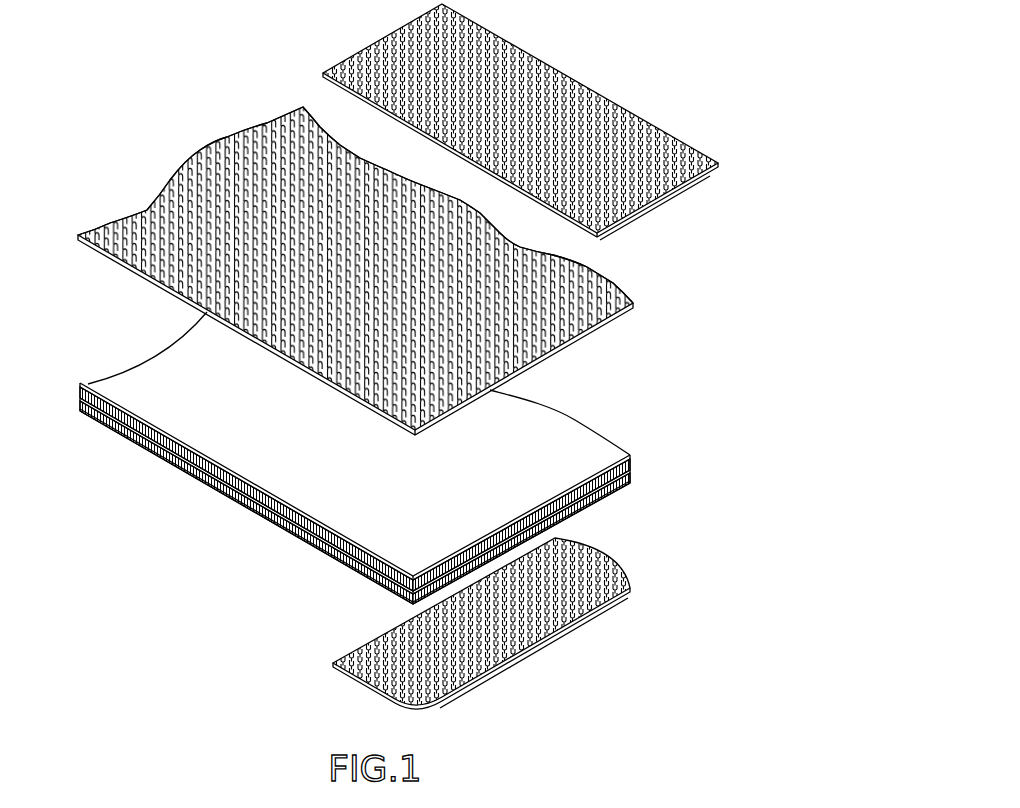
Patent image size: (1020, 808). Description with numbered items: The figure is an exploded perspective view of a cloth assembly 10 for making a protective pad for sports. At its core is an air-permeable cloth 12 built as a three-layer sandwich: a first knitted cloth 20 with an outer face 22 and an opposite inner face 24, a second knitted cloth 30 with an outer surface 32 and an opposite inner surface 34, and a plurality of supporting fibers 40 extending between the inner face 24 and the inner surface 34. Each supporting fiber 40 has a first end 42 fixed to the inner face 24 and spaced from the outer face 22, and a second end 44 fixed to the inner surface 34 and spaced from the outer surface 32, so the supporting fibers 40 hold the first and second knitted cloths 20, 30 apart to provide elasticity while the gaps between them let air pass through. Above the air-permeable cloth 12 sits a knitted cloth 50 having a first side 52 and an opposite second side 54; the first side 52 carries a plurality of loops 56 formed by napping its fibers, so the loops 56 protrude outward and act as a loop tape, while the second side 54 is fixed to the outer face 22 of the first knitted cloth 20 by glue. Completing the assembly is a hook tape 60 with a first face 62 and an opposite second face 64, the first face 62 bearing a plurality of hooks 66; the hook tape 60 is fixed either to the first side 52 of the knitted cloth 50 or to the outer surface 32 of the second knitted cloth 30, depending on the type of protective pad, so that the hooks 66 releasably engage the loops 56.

The cloth assembly 10 is at (203, 82).
The air-permeable cloth 12 is at (380, 467).
The first knitted cloth 20 is at (355, 446).
The outer face 22 is at (187, 428).
The inner face 24 is at (192, 453).
The second knitted cloth 30 is at (355, 511).
The outer surface 32 is at (347, 563).
The inner surface 34 is at (387, 578).
The supporting fibers 40 is at (344, 480).
The first end 42 is at (95, 400).
The second end 44 is at (105, 418).
The knitted cloth 50 is at (378, 269).
The first side 52 is at (613, 315).
The second side 54 is at (545, 357).
The loops 56 is at (193, 195).
The hook tape 60 is at (549, 356).
The first face 62 is at (692, 183).
The second face 64 is at (568, 82).
The hooks 66 is at (718, 173).